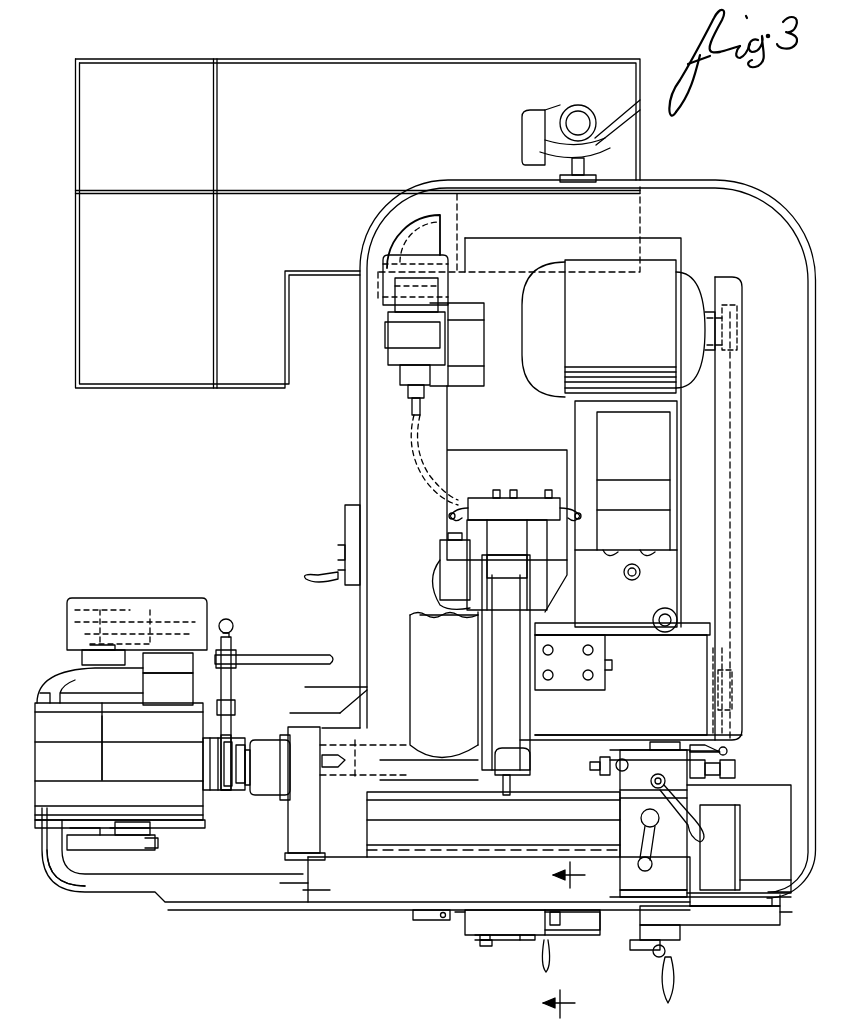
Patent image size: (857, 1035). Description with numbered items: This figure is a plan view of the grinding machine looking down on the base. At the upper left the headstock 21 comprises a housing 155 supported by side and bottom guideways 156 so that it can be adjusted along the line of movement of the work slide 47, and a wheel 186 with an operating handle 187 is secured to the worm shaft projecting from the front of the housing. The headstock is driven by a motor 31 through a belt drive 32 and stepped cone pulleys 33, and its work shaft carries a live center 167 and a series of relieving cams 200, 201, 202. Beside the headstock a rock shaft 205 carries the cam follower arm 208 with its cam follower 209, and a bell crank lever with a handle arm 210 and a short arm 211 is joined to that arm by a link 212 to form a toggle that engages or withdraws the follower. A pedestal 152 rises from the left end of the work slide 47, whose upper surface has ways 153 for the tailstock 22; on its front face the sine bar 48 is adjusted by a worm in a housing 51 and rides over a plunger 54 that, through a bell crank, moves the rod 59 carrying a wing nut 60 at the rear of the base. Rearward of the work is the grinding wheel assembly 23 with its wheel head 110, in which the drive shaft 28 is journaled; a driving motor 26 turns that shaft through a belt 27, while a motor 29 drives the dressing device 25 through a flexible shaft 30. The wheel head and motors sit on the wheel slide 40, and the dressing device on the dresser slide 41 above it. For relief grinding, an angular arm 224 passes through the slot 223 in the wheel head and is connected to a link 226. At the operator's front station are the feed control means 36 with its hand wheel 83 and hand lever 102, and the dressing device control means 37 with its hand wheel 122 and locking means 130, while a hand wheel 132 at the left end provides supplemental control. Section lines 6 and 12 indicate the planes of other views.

The section line 6 is at (569, 940).
The section line / hydraulic cylinder 12 is at (459, 705).
The headstock 21 is at (176, 824).
The tailstock 22 is at (624, 762).
The grinding wheel assembly 23 is at (705, 650).
The dressing device 25 is at (437, 559).
The driving motor 26 is at (598, 265).
The belt 27 is at (740, 465).
The drive shaft 28 is at (735, 690).
The motor 29 is at (395, 328).
The flexible shaft 30 is at (472, 500).
The motor 31 is at (72, 678).
The belt drive 32 is at (148, 608).
The stepped cone pulleys 33 is at (100, 608).
The feed control means 36 is at (686, 970).
The dressing device control means 37 is at (510, 944).
The wheel slide 40 is at (672, 243).
The dresser slide 41 is at (520, 460).
The work slide 47 is at (360, 880).
The sine bar 48 is at (470, 912).
The housing 51 is at (425, 918).
The plunger 54 is at (555, 932).
The rod 59 is at (586, 170).
The wing nut 60 is at (530, 142).
The hand wheel 83 is at (652, 952).
The hand lever 102 is at (668, 952).
The wheel head 110 is at (635, 648).
The hand wheel 122 is at (482, 940).
The locking means 130 is at (486, 947).
The hand wheel 132 is at (345, 520).
The pedestal 152 is at (300, 818).
The ways 153 is at (500, 850).
The housing 155 is at (127, 725).
The guideways 156 is at (268, 805).
The live center 167 is at (350, 757).
The wheel 186 is at (128, 842).
The operating handle 187 is at (120, 830).
The relieving cam 200 is at (205, 745).
The relieving cam 201 is at (225, 756).
The relieving cam 202 is at (238, 772).
The rock shaft 205 is at (298, 655).
The arm 208 is at (168, 689).
The cam follower 209 is at (233, 735).
The long arm 210 is at (234, 626).
The short arm 211 is at (236, 672).
The link 212 is at (168, 663).
The slot 223 is at (660, 745).
The angular arm 224 is at (708, 745).
The link 226 is at (728, 751).